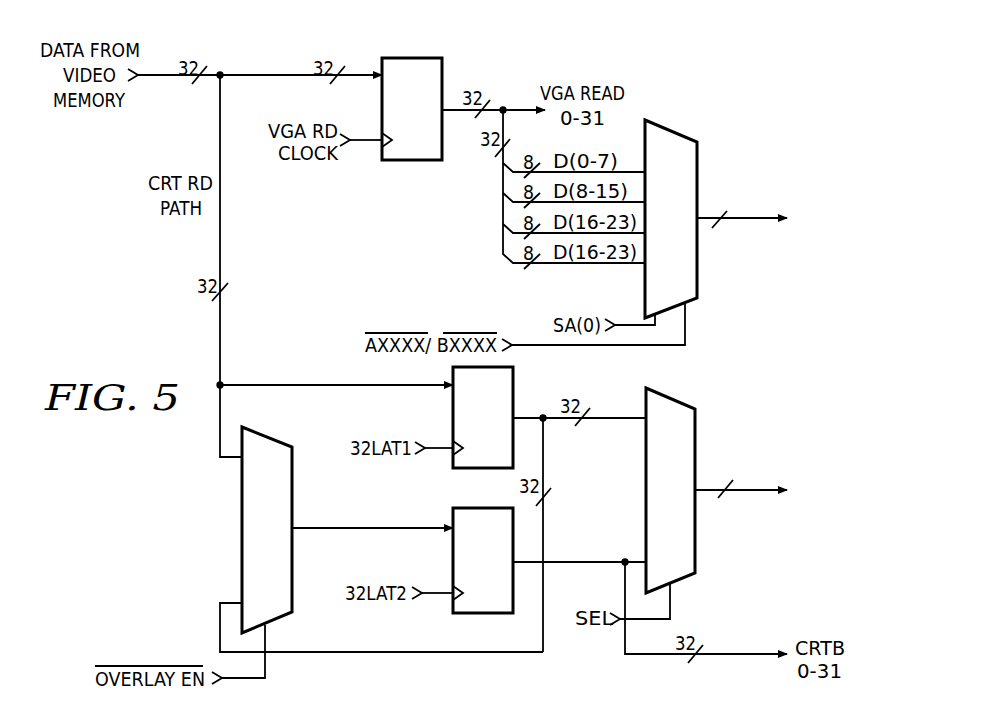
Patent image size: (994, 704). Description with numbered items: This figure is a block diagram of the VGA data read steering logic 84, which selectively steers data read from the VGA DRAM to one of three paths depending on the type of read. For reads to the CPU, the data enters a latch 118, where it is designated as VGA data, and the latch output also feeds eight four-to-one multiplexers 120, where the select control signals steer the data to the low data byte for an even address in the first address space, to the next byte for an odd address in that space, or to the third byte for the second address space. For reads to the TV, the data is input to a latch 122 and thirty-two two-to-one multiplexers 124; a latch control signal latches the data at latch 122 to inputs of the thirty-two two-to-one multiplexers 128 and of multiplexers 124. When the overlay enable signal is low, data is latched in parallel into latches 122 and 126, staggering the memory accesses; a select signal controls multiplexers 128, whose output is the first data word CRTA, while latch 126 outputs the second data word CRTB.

The VGA data read steering logic 84 is at (792, 106).
The latch 118 is at (417, 160).
The 4-1 multiplexers 120 is at (668, 125).
The latch 122 is at (513, 383).
The 2-1 multiplexers 124 is at (242, 522).
The latch 126 is at (452, 604).
The 2-1 multiplexers 128 is at (695, 530).